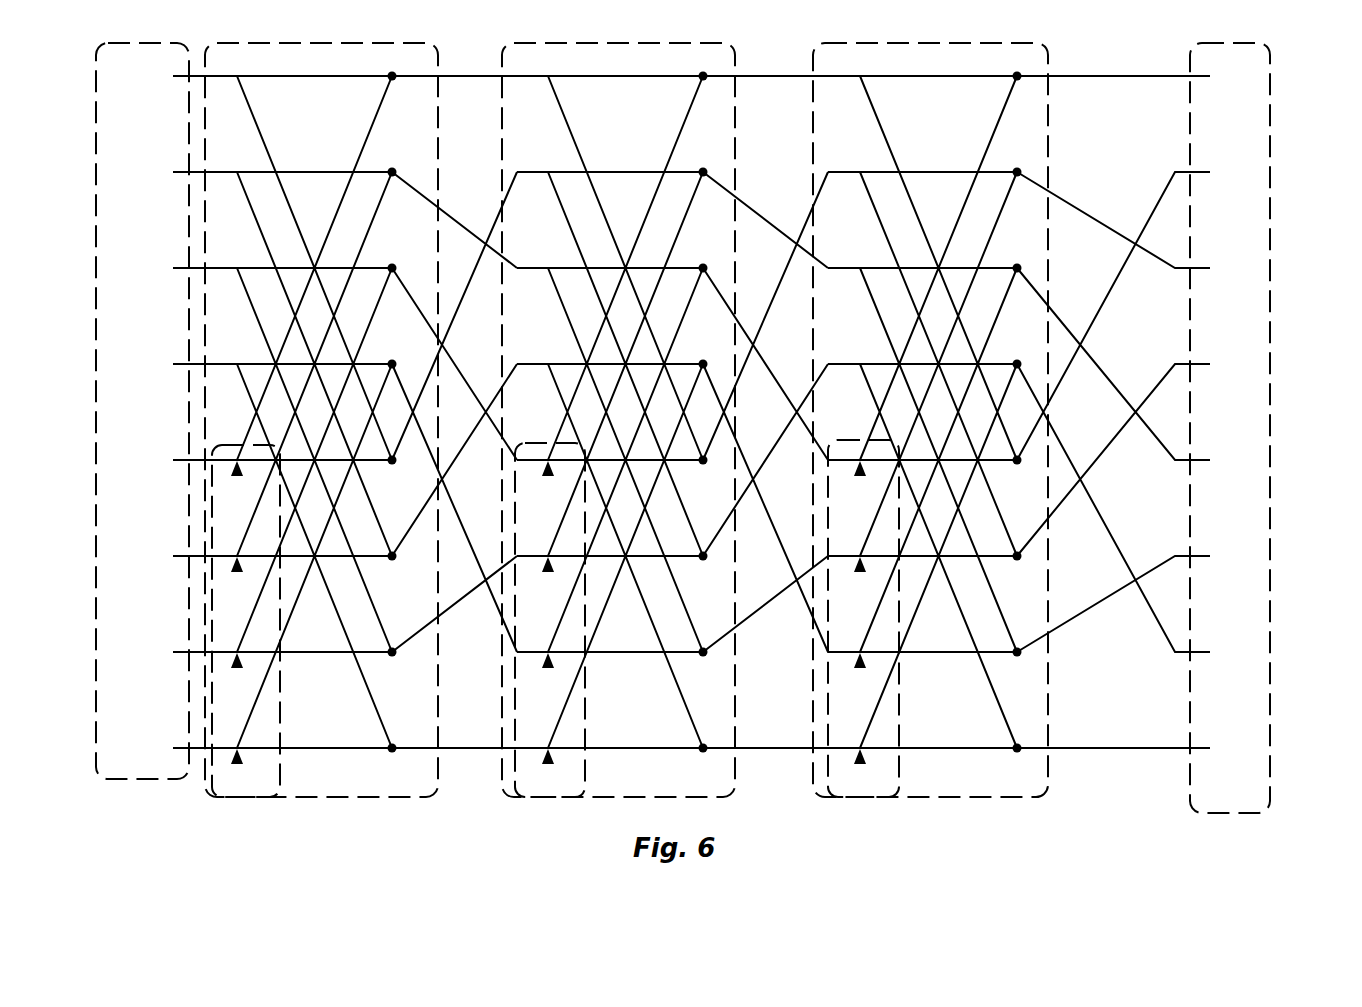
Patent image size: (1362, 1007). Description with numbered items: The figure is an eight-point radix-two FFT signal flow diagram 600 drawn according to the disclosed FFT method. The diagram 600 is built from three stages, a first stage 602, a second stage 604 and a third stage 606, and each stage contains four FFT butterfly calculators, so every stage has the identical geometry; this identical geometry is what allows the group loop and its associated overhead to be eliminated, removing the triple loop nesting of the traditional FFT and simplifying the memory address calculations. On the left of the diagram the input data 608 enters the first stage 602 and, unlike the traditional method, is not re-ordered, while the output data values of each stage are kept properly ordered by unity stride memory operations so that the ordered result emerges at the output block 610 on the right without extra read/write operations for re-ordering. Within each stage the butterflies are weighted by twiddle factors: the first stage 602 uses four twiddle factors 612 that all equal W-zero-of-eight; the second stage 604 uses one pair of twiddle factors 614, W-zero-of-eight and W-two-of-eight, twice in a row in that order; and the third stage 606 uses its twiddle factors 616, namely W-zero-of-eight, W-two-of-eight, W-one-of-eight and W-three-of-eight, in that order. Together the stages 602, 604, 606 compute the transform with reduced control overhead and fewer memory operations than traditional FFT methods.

The FFT signal flow diagram 600 is at (721, 457).
The first stage 602 is at (321, 443).
The second stage 604 is at (621, 443).
The third stage 606 is at (930, 443).
The input data 608 is at (108, 779).
The output block 610 is at (1196, 812).
The twiddle factors 612 is at (212, 807).
The twiddle factors 614 is at (517, 807).
The third stage twiddle factor multipliers 616 is at (830, 807).